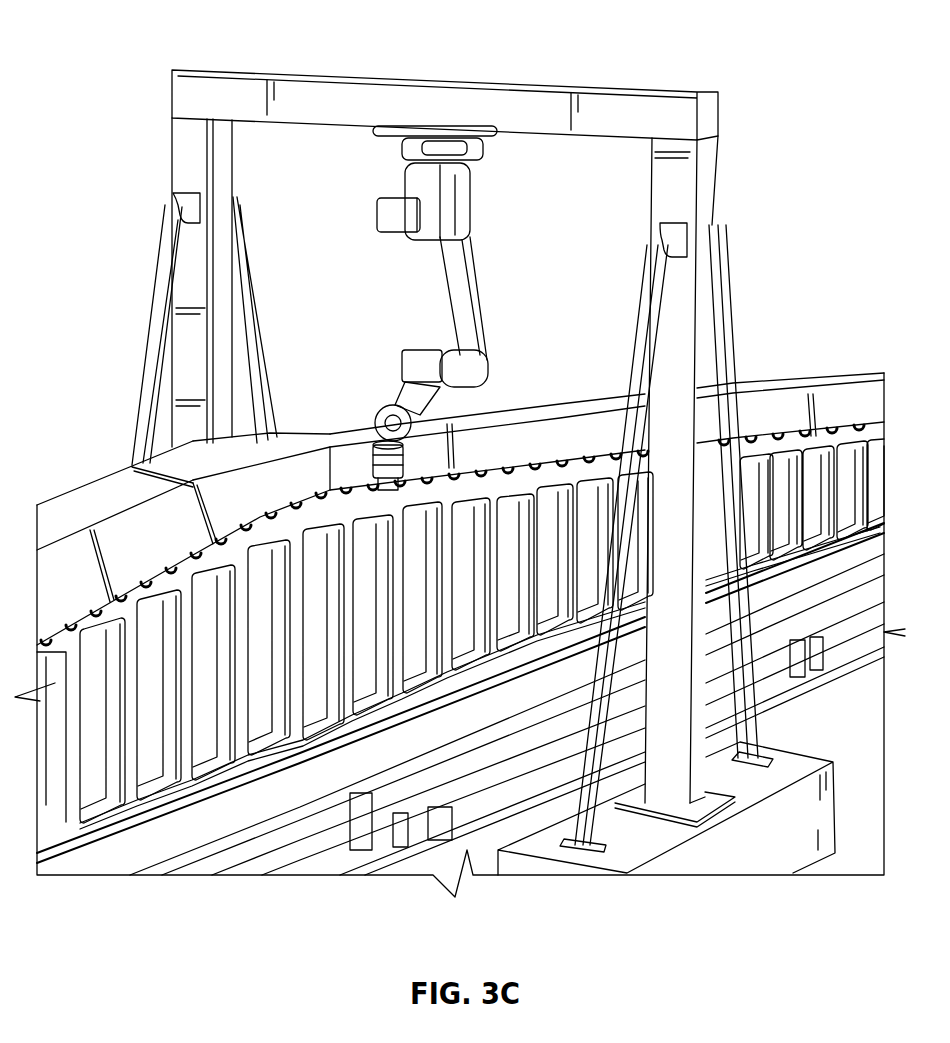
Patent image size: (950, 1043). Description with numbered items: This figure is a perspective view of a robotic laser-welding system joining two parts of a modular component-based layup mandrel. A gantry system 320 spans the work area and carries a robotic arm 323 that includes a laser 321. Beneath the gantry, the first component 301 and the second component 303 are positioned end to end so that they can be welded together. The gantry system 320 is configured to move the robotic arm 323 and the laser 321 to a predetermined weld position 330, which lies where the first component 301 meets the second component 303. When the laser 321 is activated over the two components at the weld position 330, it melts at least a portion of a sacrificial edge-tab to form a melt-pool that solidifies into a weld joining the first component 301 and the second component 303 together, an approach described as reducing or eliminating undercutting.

The gantry system 320 is at (126, 38).
The robotic arm 323 is at (406, 284).
The laser 321 is at (358, 470).
The first component 301 is at (502, 432).
The second component 303 is at (90, 498).
The weld position 330 is at (332, 468).